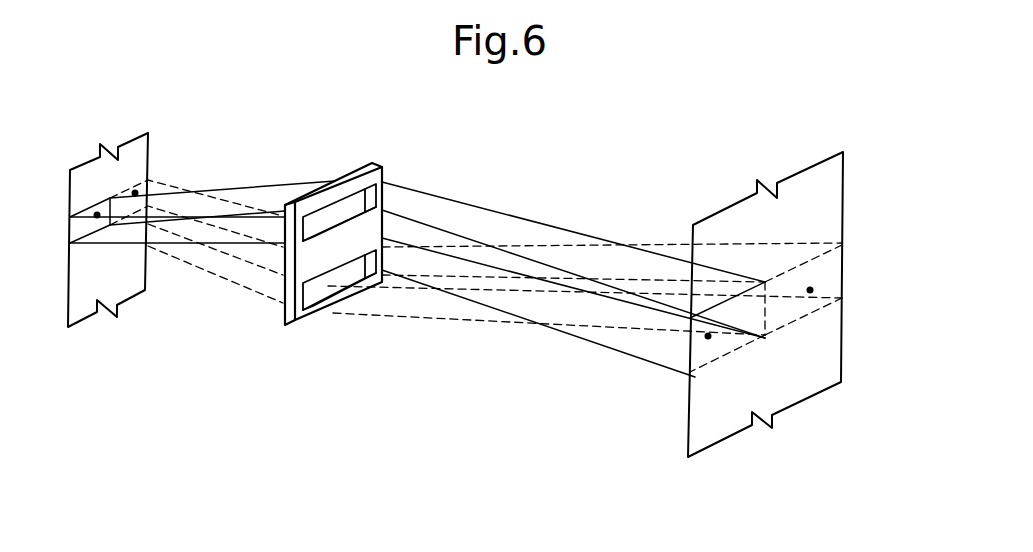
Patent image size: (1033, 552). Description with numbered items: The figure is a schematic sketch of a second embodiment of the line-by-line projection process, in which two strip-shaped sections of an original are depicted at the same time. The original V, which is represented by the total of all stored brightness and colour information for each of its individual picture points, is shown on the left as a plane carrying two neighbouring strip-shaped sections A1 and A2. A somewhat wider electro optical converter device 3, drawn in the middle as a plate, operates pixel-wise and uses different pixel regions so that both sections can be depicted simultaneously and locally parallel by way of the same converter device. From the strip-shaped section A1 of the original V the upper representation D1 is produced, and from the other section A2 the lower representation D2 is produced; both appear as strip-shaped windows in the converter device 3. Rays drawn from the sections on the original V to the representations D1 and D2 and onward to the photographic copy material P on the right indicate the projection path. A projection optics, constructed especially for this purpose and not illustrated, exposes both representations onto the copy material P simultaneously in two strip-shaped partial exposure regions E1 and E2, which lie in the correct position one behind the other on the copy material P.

The original V is at (83, 293).
The strip-shaped section A1 is at (97, 215).
The strip-shaped section A2 is at (135, 193).
The electro optical converter device 3 is at (288, 318).
The upper representation D1 is at (355, 200).
The lower representation D2 is at (335, 277).
The photographic copy material P is at (790, 382).
The strip-shaped partial exposure region E1 is at (708, 336).
The strip-shaped partial exposure region E2 is at (810, 290).